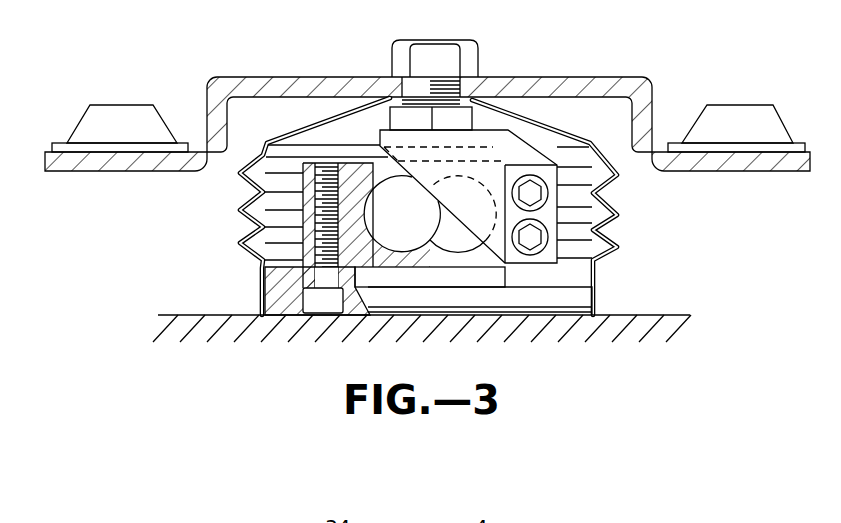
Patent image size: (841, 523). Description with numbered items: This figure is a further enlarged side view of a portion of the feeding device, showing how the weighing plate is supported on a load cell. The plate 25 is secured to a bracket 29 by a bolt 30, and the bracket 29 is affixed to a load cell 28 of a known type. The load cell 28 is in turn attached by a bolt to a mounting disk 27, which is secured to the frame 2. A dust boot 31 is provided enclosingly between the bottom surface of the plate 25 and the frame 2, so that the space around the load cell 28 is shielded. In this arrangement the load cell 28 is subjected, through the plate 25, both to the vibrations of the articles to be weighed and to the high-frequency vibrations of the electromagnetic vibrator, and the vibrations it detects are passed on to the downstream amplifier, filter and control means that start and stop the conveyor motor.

The frame 2 is at (190, 321).
The plate 25 is at (278, 75).
The mounting disk 27 is at (483, 297).
The load cell 28 is at (355, 167).
The bracket 29 is at (508, 143).
The bolt 30 is at (420, 63).
The dust boot 31 is at (615, 248).